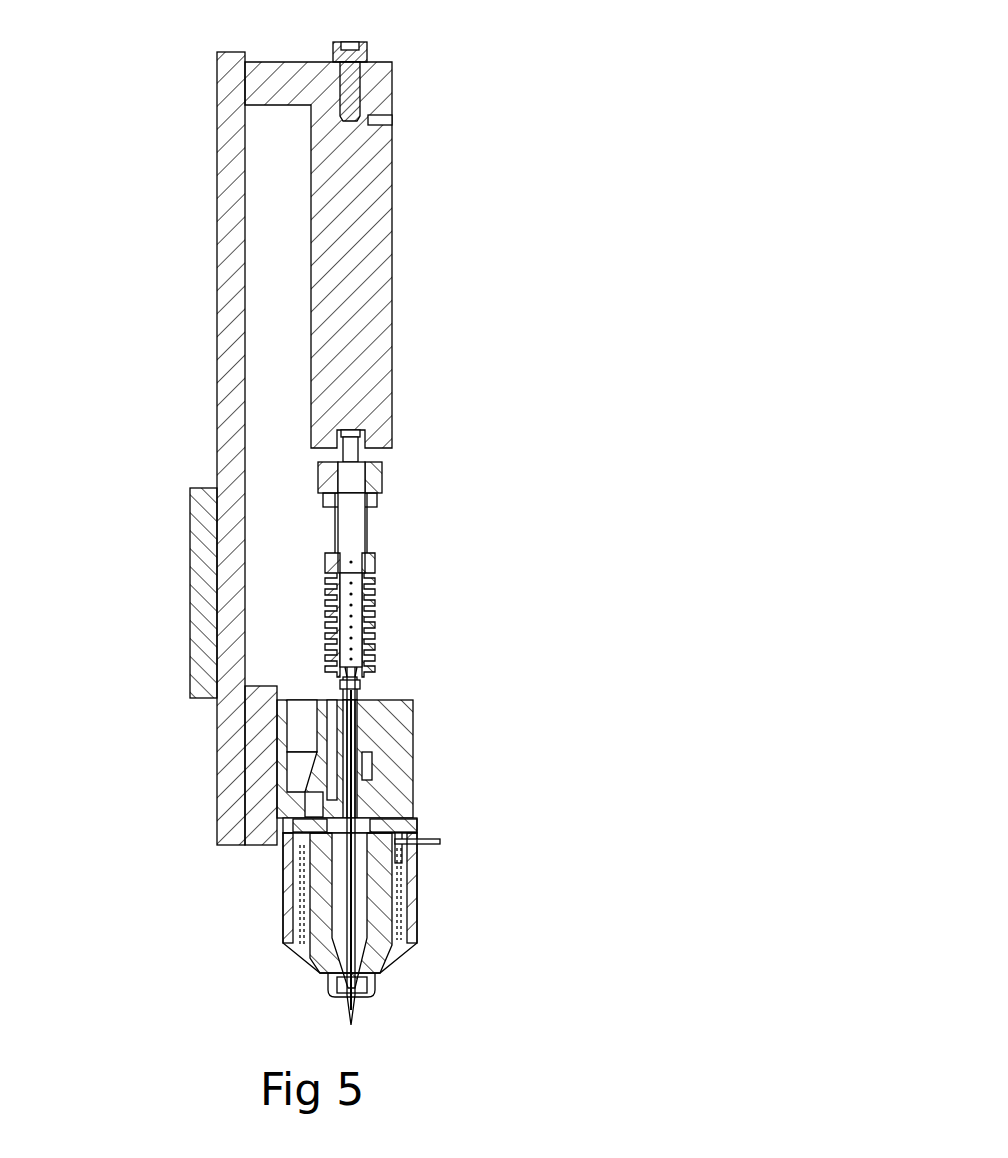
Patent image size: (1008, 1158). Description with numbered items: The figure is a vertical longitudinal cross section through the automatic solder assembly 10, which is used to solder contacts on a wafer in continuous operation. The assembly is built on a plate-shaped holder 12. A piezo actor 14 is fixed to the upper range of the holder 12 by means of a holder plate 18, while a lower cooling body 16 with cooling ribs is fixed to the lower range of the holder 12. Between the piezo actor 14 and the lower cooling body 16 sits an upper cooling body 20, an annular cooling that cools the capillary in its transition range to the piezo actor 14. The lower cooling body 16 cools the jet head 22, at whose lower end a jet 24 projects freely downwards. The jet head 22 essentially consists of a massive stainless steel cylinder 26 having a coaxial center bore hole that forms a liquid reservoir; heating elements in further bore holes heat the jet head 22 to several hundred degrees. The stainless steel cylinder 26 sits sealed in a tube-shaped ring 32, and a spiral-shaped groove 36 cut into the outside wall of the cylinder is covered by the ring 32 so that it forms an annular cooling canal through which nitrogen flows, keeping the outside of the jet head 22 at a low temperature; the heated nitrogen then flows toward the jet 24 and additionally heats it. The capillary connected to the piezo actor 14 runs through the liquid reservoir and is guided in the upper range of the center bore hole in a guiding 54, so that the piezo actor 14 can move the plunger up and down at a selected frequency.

The solder assembly 10 is at (686, 443).
The holder 12 is at (227, 300).
The piezo actor 14 is at (348, 311).
The lower cooling body 16 is at (388, 762).
The holder plate 18 is at (373, 78).
The upper cooling body 20 is at (360, 613).
The jet head 22 is at (412, 871).
The jet 24 is at (347, 1013).
The stainless steel cylinder 26 is at (442, 842).
The tube-shaped ring 32 is at (410, 937).
The spiral-shaped groove 36 is at (400, 908).
The guiding 54 is at (360, 683).